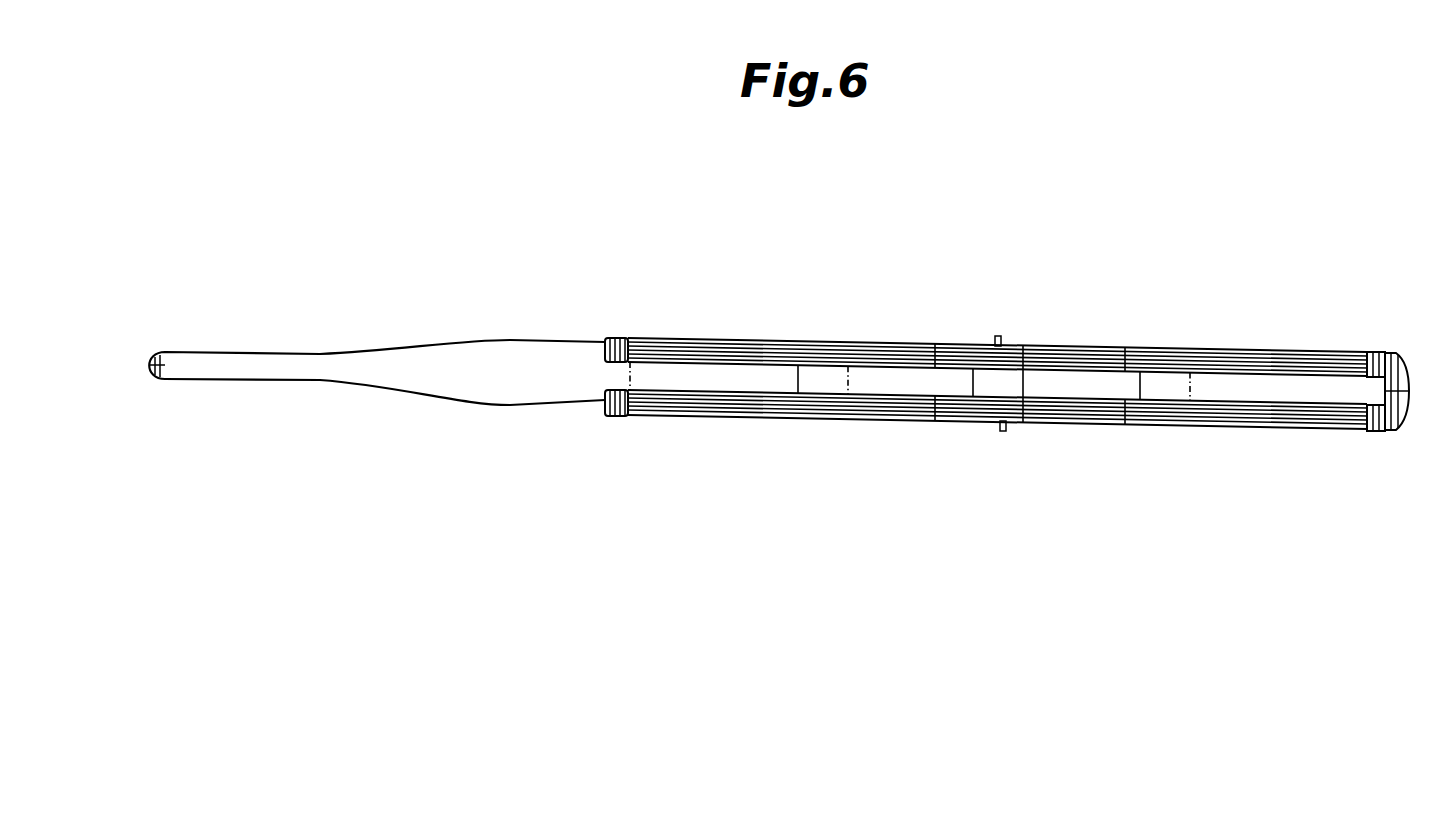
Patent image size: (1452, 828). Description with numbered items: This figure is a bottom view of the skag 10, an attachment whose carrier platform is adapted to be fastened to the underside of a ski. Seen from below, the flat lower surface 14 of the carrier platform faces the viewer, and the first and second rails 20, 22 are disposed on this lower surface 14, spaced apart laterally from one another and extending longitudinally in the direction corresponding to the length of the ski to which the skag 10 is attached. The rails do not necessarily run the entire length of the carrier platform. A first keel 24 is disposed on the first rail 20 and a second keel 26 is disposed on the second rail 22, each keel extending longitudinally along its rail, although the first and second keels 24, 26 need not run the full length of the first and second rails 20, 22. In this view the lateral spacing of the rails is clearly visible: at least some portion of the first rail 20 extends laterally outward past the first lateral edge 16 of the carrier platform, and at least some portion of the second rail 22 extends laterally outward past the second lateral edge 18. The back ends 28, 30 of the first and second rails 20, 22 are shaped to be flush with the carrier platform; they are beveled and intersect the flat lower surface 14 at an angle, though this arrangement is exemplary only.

The skag 10 is at (426, 286).
The lower surface 14 is at (518, 382).
The first lateral edge 16 is at (578, 333).
The second lateral edge 18 is at (575, 412).
The first rail 20 is at (1100, 341).
The second rail 22 is at (1103, 427).
The first keel 24 is at (998, 336).
The second keel 26 is at (1003, 431).
The back end of first rail 28 is at (1372, 352).
The back end of second rail 30 is at (1370, 435).